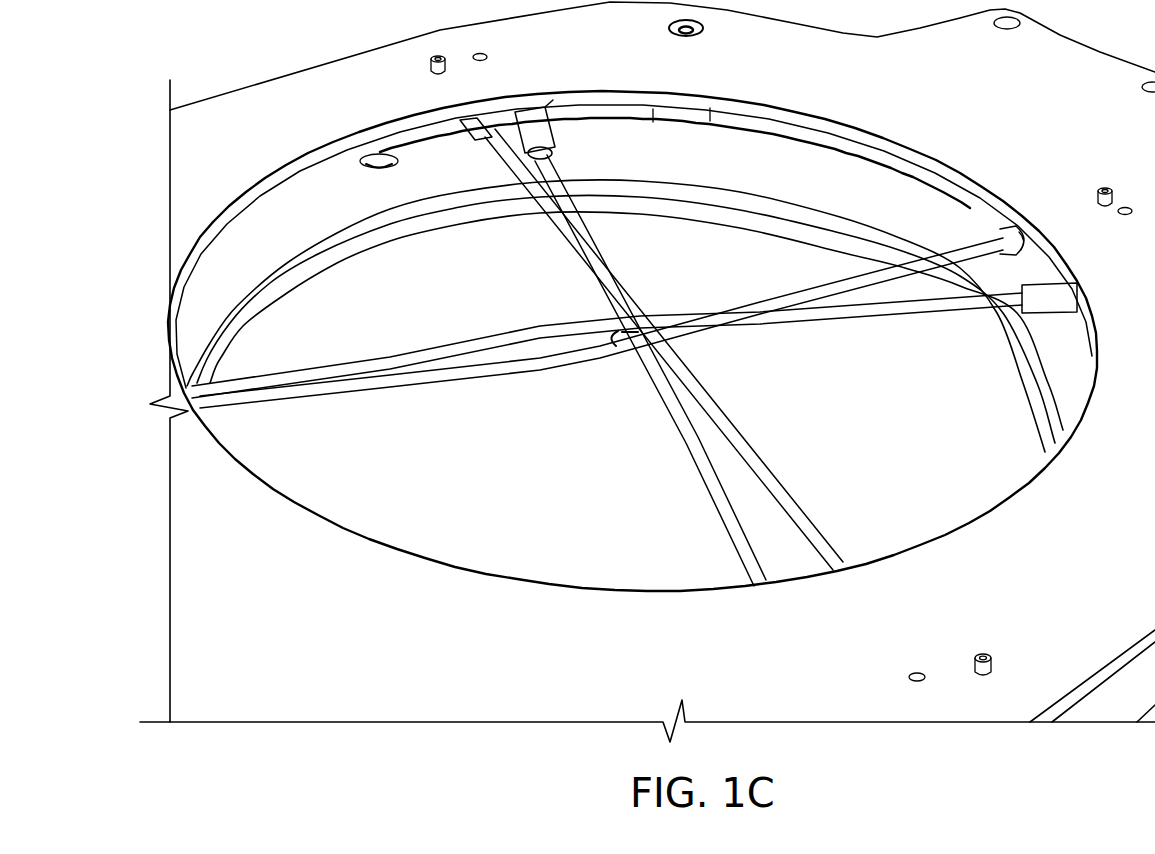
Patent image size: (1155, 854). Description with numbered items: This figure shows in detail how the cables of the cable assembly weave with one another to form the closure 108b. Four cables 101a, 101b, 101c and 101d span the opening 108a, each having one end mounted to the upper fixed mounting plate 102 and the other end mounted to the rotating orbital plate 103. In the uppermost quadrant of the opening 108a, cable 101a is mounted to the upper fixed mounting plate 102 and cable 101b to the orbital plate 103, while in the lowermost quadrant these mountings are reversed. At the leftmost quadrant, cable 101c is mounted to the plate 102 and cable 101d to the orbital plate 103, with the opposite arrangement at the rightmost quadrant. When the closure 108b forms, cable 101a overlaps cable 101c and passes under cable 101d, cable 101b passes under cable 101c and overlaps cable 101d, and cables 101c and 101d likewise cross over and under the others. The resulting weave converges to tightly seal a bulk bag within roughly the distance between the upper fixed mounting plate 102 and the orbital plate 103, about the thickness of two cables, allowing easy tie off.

The cable 101a is at (468, 122).
The cable 101b is at (533, 112).
The cable 101c is at (325, 381).
The cable 101d is at (458, 373).
The upper fixed mounting plate 102 is at (252, 710).
The orbital plate 103 is at (280, 262).
The opening 108a is at (925, 418).
The closure 108b is at (613, 343).